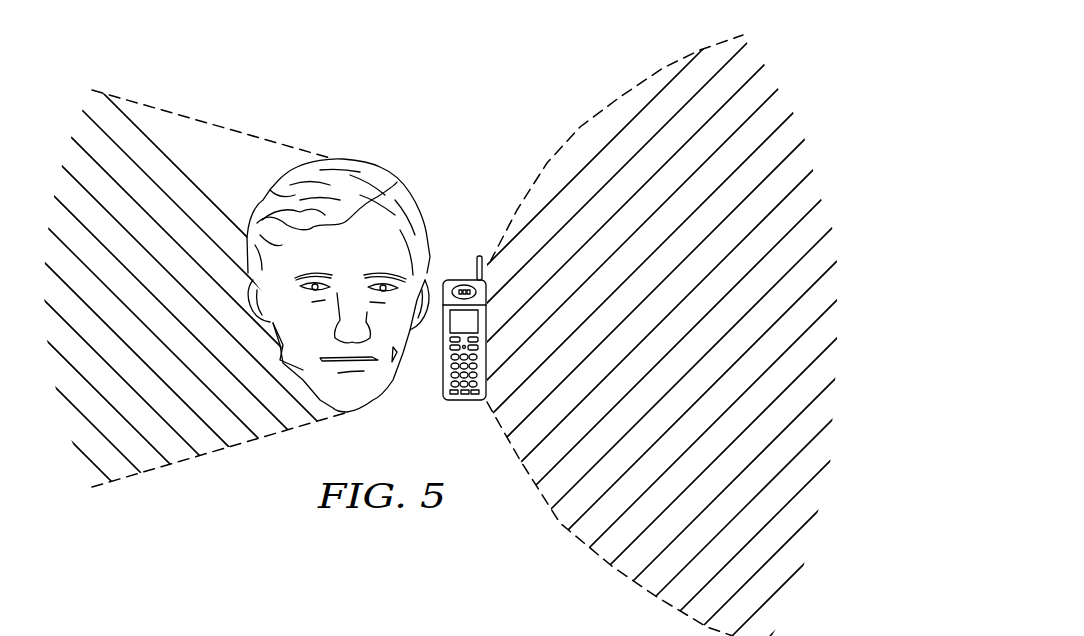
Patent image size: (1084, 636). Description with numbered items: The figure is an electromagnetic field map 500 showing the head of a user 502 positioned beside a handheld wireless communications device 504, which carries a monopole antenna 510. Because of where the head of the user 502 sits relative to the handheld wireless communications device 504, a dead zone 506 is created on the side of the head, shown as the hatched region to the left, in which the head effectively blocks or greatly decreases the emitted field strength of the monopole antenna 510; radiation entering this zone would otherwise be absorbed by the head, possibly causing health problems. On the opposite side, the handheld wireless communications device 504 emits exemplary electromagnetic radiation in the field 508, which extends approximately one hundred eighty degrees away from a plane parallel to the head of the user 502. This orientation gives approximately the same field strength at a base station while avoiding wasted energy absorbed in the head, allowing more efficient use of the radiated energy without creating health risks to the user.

The electromagnetic field map 500 is at (491, 120).
The head of a user 502 is at (372, 162).
The handheld wireless communications device 504 is at (465, 403).
The dead zone 506 is at (194, 124).
The field 508 is at (603, 557).
The monopole antenna 510 is at (479, 255).